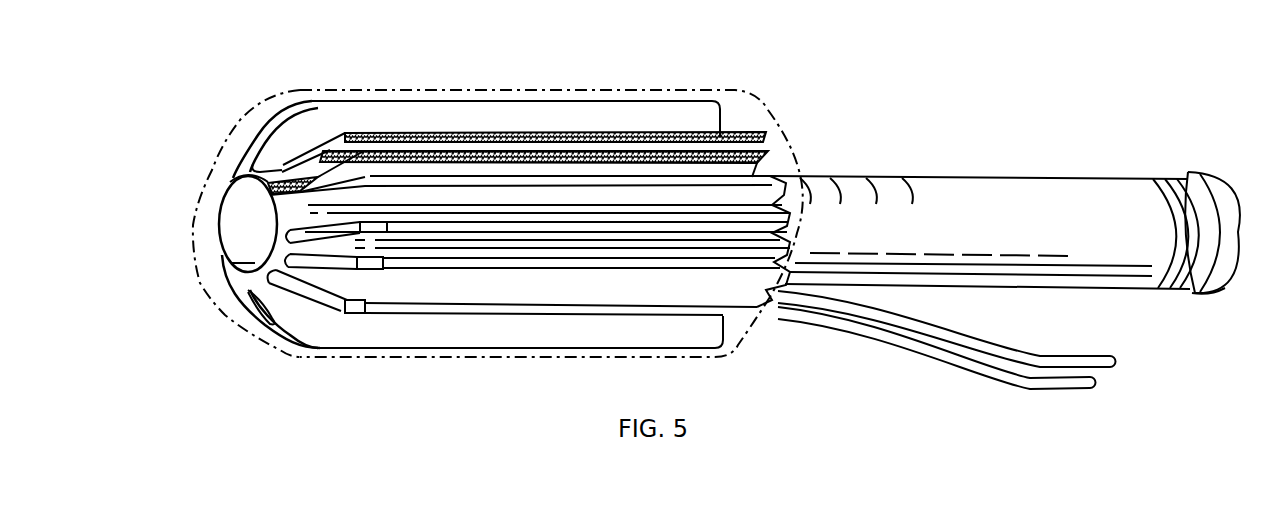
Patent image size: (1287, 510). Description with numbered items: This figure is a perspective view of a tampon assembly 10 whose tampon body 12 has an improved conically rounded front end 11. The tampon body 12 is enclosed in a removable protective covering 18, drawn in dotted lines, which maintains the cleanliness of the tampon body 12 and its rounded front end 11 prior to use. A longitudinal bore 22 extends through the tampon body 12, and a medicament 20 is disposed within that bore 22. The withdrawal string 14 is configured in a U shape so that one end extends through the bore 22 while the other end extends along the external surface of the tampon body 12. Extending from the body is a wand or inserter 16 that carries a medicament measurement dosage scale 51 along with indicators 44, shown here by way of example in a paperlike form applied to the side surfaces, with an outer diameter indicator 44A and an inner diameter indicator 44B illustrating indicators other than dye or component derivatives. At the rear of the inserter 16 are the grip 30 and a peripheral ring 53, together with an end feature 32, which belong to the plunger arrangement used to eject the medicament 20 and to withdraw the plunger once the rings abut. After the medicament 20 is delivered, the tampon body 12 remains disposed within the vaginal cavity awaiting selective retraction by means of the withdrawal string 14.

The tampon assembly 10 is at (690, 80).
The conically rounded front end 11 is at (302, 153).
The tampon body 12 is at (438, 330).
The withdrawal string 14 is at (1037, 380).
The wand or inserter 16 is at (983, 188).
The removable protective covering 18 is at (505, 87).
The medicament 20 is at (242, 237).
The longitudinal bore 22 is at (242, 192).
The grip 30 is at (1165, 178).
The end cap / flange 32 is at (1220, 228).
The indicators 44 is at (429, 133).
The outer diameter indicator 44A is at (317, 180).
The inner diameter indicator 44B is at (558, 152).
The medicament measurement dosage scale 51 is at (868, 178).
The peripheral ring 53 is at (1210, 295).